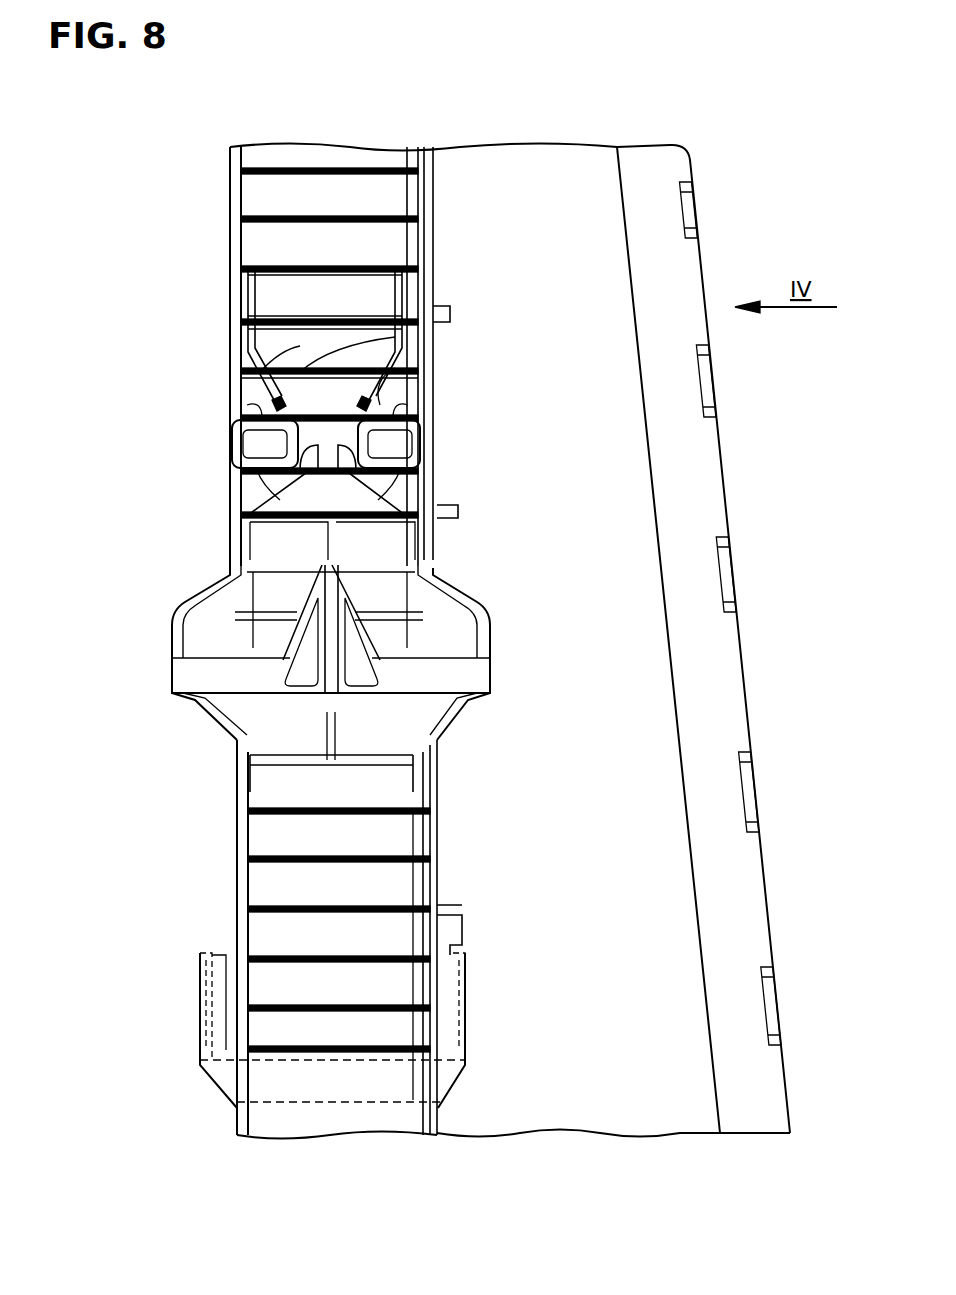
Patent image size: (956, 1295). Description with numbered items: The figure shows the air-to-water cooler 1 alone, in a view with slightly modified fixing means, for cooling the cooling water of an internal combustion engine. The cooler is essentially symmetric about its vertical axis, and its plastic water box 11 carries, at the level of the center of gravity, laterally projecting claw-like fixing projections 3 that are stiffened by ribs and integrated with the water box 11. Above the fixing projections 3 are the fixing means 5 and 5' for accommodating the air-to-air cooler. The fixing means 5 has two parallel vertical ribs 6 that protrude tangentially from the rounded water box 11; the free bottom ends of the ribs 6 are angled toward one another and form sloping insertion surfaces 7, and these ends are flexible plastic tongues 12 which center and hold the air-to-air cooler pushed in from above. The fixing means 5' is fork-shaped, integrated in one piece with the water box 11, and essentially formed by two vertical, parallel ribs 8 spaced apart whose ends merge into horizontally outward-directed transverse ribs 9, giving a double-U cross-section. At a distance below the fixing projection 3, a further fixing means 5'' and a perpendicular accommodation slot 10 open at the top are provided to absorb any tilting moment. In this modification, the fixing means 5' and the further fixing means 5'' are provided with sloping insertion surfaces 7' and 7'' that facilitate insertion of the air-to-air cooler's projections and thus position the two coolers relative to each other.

The air-to-water cooler 1 is at (212, 262).
The fixing means 5 is at (265, 343).
The ribs 6 is at (247, 290).
The flexible plastic tongues 12 is at (250, 382).
The sloping insertion surfaces 7 is at (382, 362).
The transverse ribs 9 is at (247, 405).
The fixing means 5' is at (269, 444).
The ribs 8 is at (270, 446).
The sloping insertion surfaces 7' is at (335, 514).
The fixing projections 3 is at (267, 690).
The water box 11 is at (310, 828).
The sloping insertion surfaces 7'' is at (196, 976).
The accommodation slot 10 is at (232, 978).
The further fixing means 5'' is at (293, 1030).